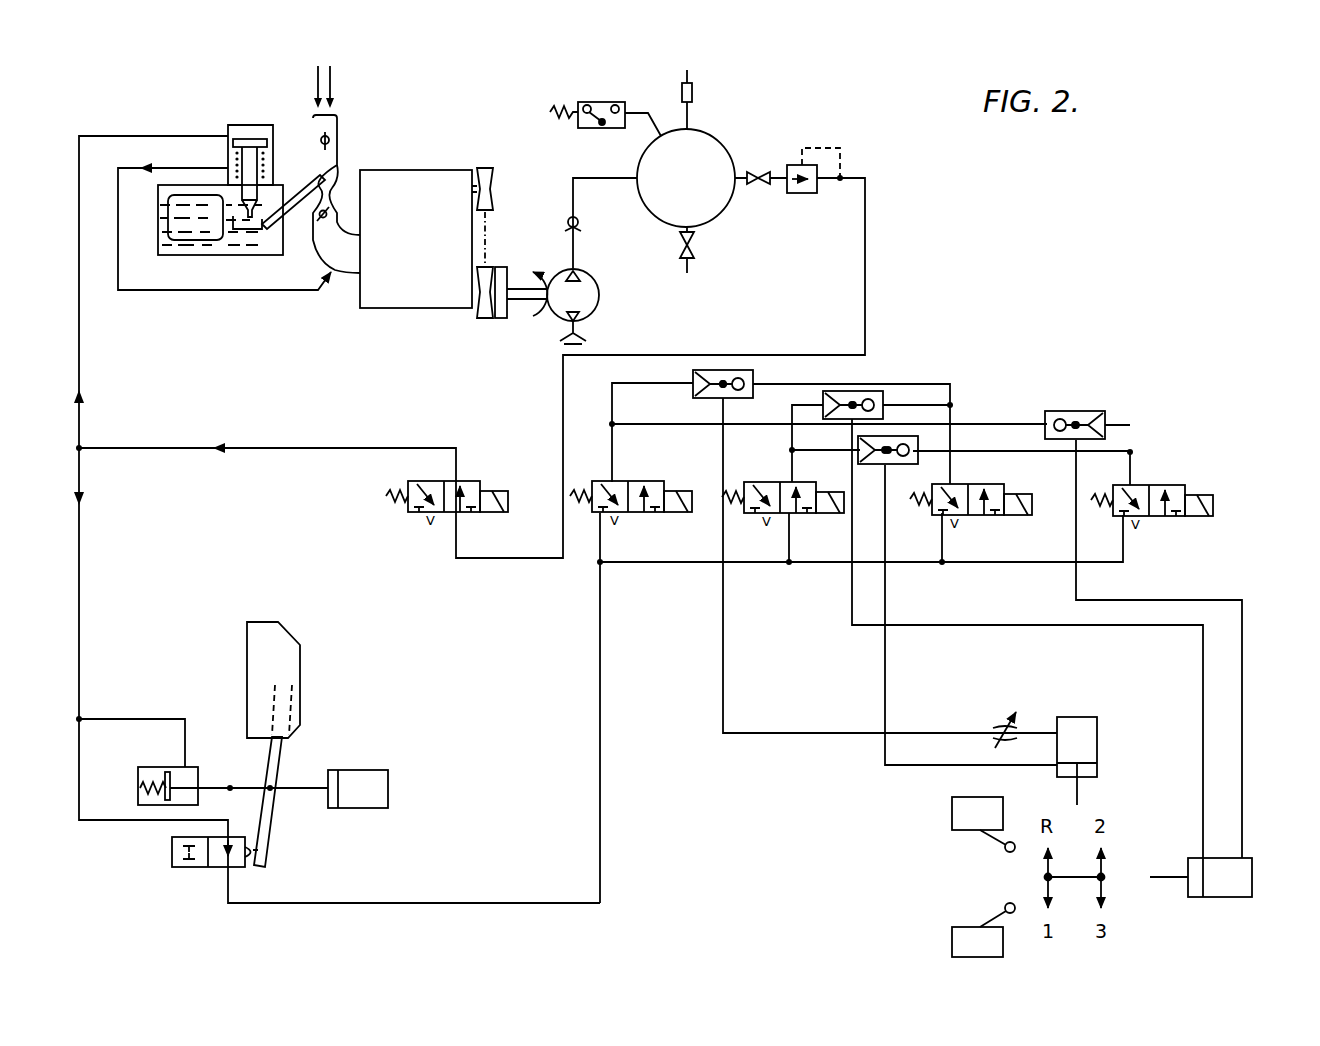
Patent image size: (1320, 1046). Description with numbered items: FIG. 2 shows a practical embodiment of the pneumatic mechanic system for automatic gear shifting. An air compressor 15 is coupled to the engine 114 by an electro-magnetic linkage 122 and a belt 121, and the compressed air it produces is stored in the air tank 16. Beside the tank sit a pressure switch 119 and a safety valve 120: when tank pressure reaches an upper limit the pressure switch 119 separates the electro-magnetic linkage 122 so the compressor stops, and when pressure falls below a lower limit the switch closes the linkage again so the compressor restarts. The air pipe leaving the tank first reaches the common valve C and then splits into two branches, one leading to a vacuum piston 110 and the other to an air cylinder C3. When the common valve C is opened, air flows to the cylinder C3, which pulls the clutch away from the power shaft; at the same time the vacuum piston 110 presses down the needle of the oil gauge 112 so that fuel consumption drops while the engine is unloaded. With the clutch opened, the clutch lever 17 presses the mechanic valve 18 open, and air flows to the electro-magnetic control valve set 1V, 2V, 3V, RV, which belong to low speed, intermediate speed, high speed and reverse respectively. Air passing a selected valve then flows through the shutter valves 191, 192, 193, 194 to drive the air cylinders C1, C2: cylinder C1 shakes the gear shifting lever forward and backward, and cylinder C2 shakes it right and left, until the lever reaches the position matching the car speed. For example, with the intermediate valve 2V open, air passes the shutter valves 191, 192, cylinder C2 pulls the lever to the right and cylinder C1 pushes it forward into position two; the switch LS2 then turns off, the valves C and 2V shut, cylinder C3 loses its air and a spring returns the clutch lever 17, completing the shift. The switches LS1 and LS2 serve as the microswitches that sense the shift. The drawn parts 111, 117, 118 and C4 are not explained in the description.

The vacuum piston 110 is at (250, 118).
The lever 111 is at (298, 210).
The oil gauge 112 is at (240, 232).
The engine 114 is at (412, 166).
The air compressor 15 is at (600, 306).
The air tank 16 is at (722, 138).
The clutch lever 17 is at (305, 646).
The mechanic valve 18 is at (182, 870).
The shift lever 117 is at (275, 822).
The pressure relief valve 118 is at (821, 134).
The pressure switch 119 is at (598, 100).
The safety valve 120 is at (699, 93).
The belt 121 is at (494, 236).
The electro-magnetic linkage 122 is at (498, 322).
The shutter valve 191 is at (904, 432).
The shutter valve 192 is at (868, 389).
The shutter valve 193 is at (1077, 408).
The shutter valve 194 is at (693, 396).
The common valve C is at (430, 514).
The electro-magnetic control valve 1V is at (650, 514).
The electro-magnetic control valve 2V is at (805, 515).
The electro-magnetic control valve 3V is at (985, 517).
The electro-magnetic control valve RV is at (1157, 518).
The air cylinder C1 is at (1097, 716).
The air cylinder C2 is at (1252, 893).
The air cylinder C3 is at (138, 778).
The cylinder C4 is at (388, 778).
The switch LS1 is at (983, 930).
The switch LS2 is at (983, 824).